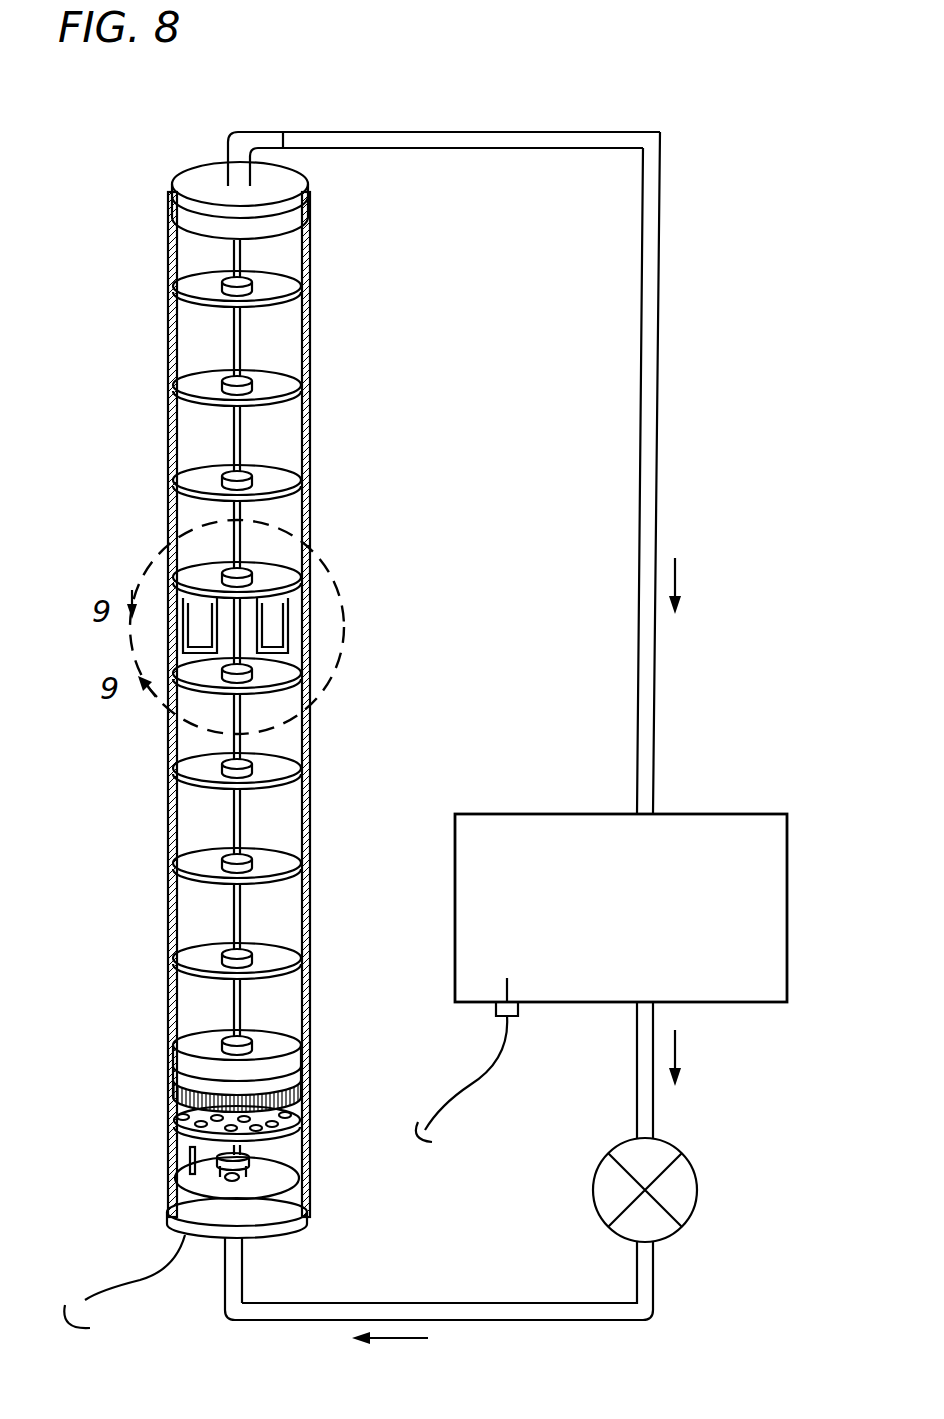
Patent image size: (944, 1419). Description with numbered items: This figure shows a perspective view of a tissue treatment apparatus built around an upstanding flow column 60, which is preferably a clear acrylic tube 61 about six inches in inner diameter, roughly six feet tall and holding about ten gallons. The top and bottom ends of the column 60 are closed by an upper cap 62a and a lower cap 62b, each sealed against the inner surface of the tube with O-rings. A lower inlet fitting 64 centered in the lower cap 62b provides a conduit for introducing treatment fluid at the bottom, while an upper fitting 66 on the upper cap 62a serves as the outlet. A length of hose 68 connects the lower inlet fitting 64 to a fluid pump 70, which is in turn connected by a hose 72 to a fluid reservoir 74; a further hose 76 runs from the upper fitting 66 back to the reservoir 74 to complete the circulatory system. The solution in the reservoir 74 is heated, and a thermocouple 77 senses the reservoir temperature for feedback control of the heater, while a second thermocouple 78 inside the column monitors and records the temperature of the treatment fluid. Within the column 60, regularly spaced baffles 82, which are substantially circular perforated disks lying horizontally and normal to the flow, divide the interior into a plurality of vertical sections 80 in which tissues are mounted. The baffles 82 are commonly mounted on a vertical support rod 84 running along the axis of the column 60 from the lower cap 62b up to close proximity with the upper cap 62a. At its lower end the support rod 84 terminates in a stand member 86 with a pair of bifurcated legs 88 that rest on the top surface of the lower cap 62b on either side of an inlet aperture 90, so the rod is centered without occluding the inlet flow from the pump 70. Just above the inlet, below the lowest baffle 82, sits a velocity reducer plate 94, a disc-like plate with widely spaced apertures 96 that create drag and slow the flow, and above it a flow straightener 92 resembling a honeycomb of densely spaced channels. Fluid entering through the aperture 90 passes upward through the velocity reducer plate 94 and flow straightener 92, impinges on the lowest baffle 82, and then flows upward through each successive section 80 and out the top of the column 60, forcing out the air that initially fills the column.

The flow column 60 is at (128, 436).
The clear acrylic tube 61 is at (168, 320).
The upper cap 62a is at (183, 178).
The lower cap 62b is at (278, 1236).
The lower inlet fitting 64 is at (225, 1312).
The upper fitting 66 is at (232, 134).
The hose 68 is at (425, 1303).
The fluid pump 70 is at (697, 1196).
The hose 72 is at (655, 1113).
The fluid reservoir 74 is at (722, 1005).
The hose 76 is at (655, 738).
The thermocouple 77 is at (507, 985).
The thermocouple 78 is at (190, 1156).
The vertical sections 80 is at (318, 290).
The baffles 82 is at (280, 763).
The vertical support rod 84 is at (233, 812).
The stand member 86 is at (250, 1156).
The bifurcated legs 88 is at (253, 1172).
The inlet aperture 90 is at (230, 1180).
The flow straightener 92 is at (187, 1076).
The velocity reducer plate 94 is at (228, 1130).
The apertures 96 is at (276, 1122).